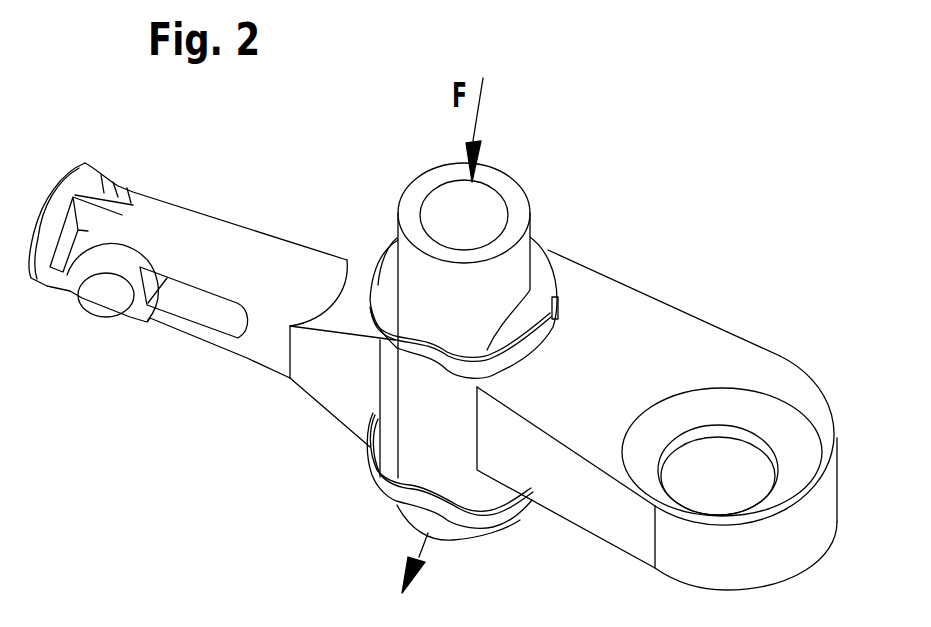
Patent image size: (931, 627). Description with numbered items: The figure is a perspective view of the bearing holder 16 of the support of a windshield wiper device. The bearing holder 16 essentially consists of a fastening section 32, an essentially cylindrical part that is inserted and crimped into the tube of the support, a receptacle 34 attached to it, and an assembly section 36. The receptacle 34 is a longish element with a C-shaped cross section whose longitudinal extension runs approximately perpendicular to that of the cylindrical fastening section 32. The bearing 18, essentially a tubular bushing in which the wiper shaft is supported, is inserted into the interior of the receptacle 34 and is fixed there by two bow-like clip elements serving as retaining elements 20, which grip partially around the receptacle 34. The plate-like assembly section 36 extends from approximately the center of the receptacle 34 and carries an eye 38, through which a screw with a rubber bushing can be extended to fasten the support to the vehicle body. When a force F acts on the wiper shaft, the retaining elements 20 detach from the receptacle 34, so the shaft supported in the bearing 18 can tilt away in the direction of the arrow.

The bearing holder 16 is at (433, 358).
The bearing 18 is at (423, 278).
The retaining elements 20 is at (380, 343).
The fastening section 32 is at (178, 325).
The receptacle 34 is at (540, 247).
The assembly section 36 is at (647, 323).
The eye 38 is at (768, 426).